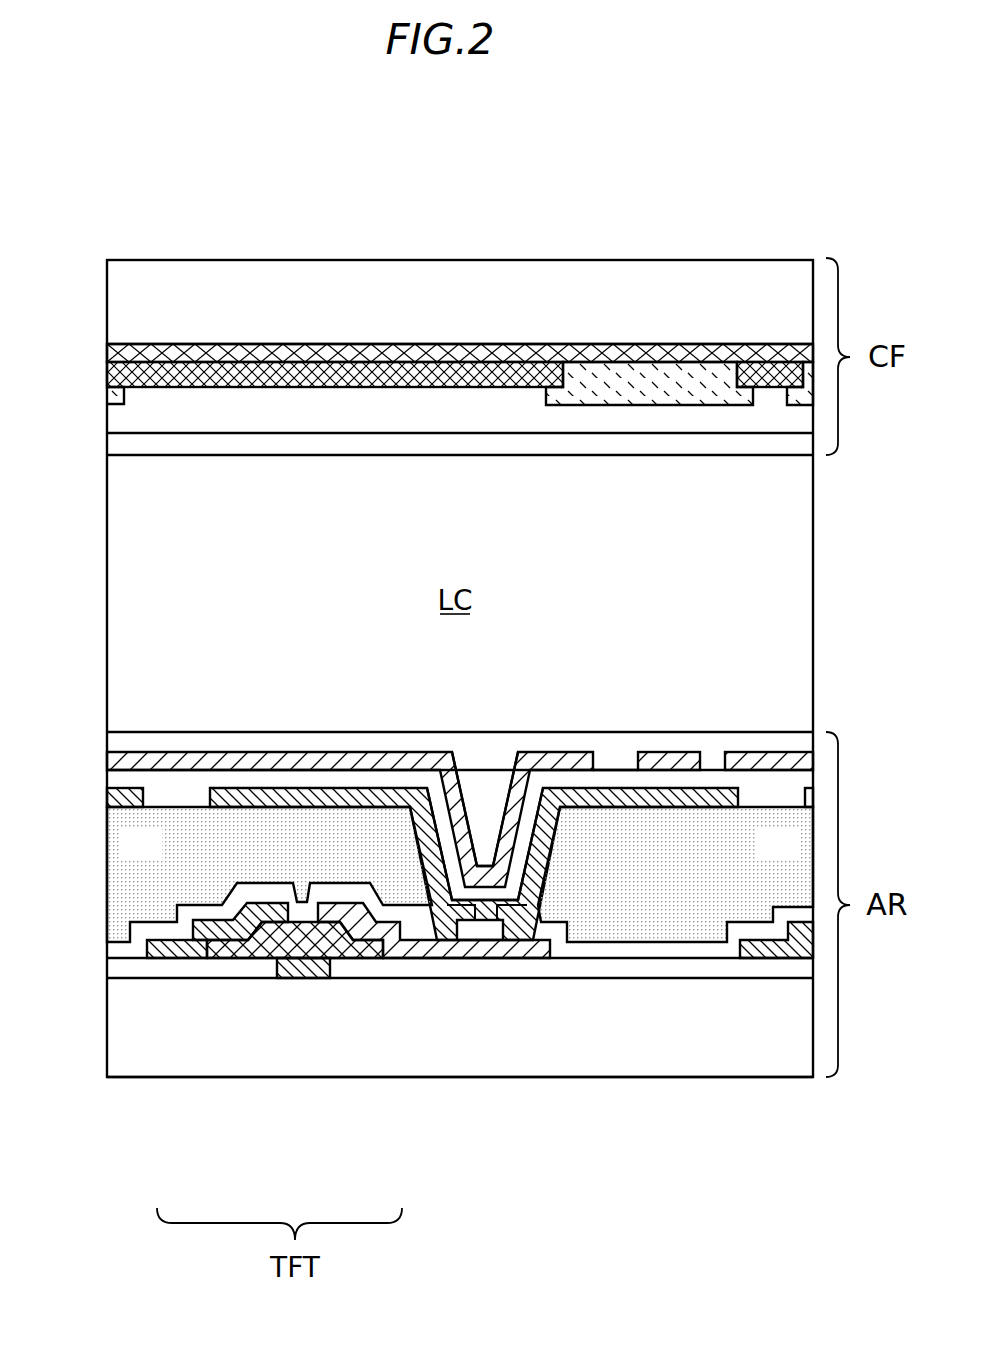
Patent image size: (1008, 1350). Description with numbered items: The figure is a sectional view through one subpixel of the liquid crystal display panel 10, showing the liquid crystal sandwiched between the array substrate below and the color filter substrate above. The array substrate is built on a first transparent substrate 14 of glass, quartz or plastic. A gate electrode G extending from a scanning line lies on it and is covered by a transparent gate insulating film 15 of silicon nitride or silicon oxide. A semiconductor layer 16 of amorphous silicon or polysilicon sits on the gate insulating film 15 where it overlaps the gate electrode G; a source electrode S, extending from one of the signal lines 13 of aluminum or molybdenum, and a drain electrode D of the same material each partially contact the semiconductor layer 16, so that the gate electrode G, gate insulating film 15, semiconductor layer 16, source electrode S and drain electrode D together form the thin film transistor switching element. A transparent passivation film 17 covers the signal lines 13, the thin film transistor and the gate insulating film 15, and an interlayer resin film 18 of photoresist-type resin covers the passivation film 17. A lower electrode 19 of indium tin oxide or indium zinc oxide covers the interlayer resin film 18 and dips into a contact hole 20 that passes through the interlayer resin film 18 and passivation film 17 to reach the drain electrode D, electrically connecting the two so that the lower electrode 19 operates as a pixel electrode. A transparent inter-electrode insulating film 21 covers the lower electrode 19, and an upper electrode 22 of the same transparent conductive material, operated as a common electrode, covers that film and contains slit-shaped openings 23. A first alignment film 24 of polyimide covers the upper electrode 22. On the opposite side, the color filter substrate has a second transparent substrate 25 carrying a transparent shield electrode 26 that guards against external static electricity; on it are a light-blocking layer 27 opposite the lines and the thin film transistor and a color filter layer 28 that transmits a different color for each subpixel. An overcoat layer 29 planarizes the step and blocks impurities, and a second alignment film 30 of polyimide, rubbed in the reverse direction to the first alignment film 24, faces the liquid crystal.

The liquid crystal display panel 10 is at (58, 189).
The second transparent substrate 25 is at (197, 297).
The shield electrode 26 is at (287, 352).
The light-blocking layer 27 is at (367, 373).
The color filter layer 28 is at (638, 380).
The overcoat layer 29 is at (437, 427).
The second alignment film 30 is at (503, 445).
The first alignment film 24 is at (714, 745).
The upper electrode 22 is at (231, 757).
The slit-shaped openings 23 is at (608, 748).
The inter-electrode insulating film 21 is at (345, 779).
The lower electrode 19 is at (398, 795).
The contact hole 20 is at (486, 862).
The interlayer resin film 18 is at (160, 858).
The passivation film 17 is at (583, 948).
The gate insulating film 15 is at (529, 968).
The first transparent substrate 14 is at (651, 1020).
The signal lines 13 is at (164, 953).
The gate electrode G is at (300, 962).
The semiconductor layer 16 is at (305, 925).
The source electrode S is at (255, 935).
The drain electrode D is at (337, 920).